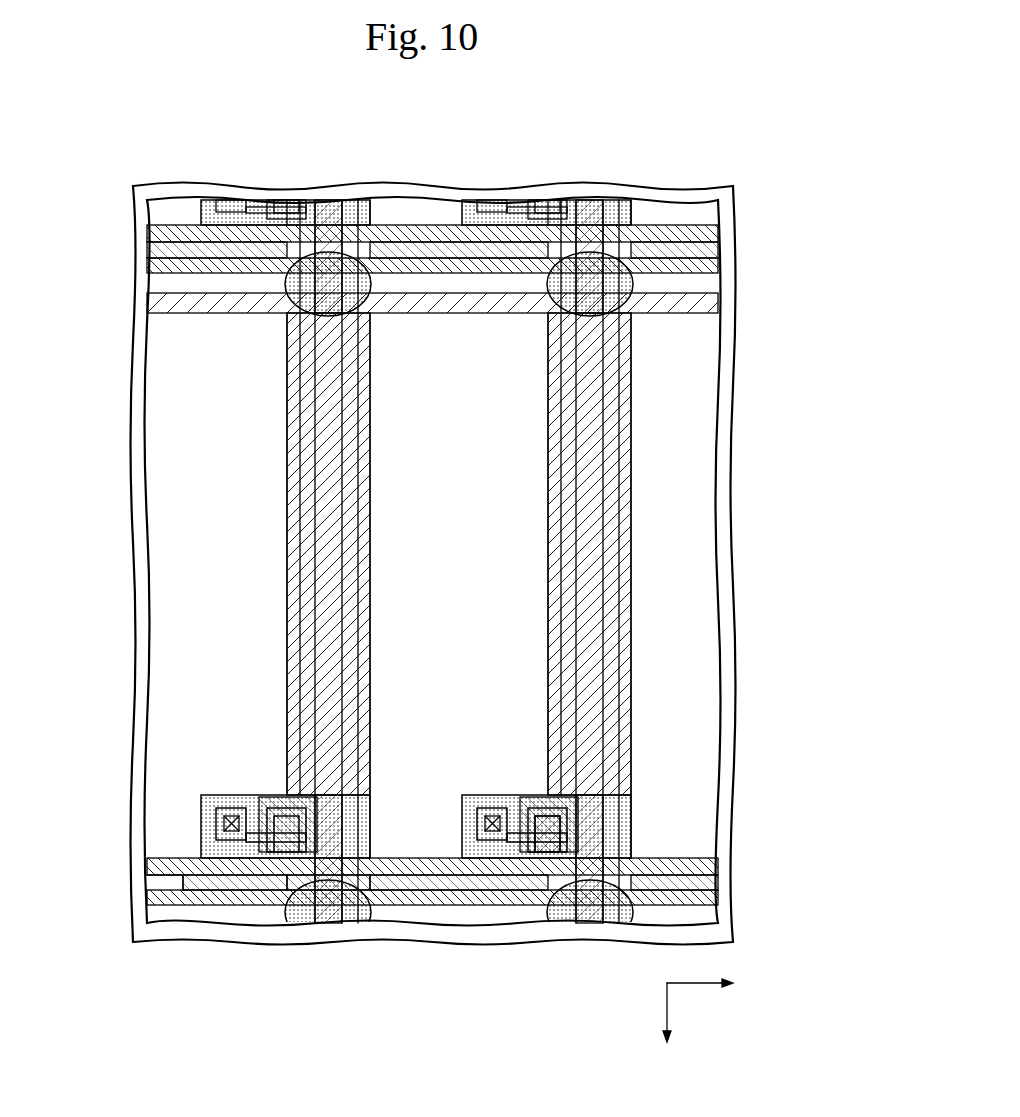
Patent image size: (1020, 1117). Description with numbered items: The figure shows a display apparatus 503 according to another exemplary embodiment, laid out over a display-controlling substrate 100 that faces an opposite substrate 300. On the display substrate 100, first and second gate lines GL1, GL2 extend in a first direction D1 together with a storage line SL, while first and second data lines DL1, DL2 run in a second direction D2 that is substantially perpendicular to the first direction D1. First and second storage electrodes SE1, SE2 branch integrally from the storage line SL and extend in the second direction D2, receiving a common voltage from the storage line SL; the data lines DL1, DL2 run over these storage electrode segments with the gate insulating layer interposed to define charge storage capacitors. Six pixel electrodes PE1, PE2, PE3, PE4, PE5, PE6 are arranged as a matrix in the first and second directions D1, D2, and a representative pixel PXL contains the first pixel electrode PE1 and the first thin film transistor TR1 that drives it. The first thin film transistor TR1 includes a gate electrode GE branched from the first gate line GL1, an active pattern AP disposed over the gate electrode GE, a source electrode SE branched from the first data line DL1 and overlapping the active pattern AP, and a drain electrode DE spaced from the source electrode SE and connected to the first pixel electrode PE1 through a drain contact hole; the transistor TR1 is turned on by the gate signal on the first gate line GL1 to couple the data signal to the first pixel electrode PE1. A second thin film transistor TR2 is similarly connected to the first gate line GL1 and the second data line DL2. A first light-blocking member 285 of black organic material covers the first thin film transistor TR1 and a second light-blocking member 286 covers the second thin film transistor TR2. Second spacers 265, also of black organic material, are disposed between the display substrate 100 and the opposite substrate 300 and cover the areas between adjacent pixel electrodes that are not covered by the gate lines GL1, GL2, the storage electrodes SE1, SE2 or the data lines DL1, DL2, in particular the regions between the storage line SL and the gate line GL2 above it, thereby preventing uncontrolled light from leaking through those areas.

The opposite substrate 300 is at (730, 510).
The display-controlling substrate 100 is at (712, 592).
The display apparatus 503 is at (812, 503).
The first gate line GL1 is at (695, 862).
The second gate line GL2 is at (690, 228).
The storage line SL is at (710, 305).
The first data line DL1 is at (592, 907).
The second data line DL2 is at (330, 905).
The first storage electrode SE1 is at (548, 503).
The second storage electrode SE2 is at (287, 503).
The first pixel electrode PE1 is at (423, 240).
The second pixel electrode PE2 is at (225, 240).
The third pixel electrode PE3 is at (658, 255).
The fourth pixel electrode PE4 is at (345, 925).
The fifth pixel electrode PE5 is at (163, 882).
The sixth pixel electrode PE6 is at (700, 884).
The second spacer 265 is at (352, 315).
The first light-blocking member 285 is at (478, 795).
The second light-blocking member 286 is at (217, 795).
The first thin film transistor TR1 is at (529, 618).
The second thin film transistor TR2 is at (287, 860).
The drain electrode DE is at (488, 838).
The gate electrode GE is at (530, 827).
The active pattern AP is at (553, 813).
The source electrode SE is at (568, 835).
The pixel PXL is at (507, 1038).
The first direction D1 is at (715, 986).
The second direction D2 is at (668, 1027).